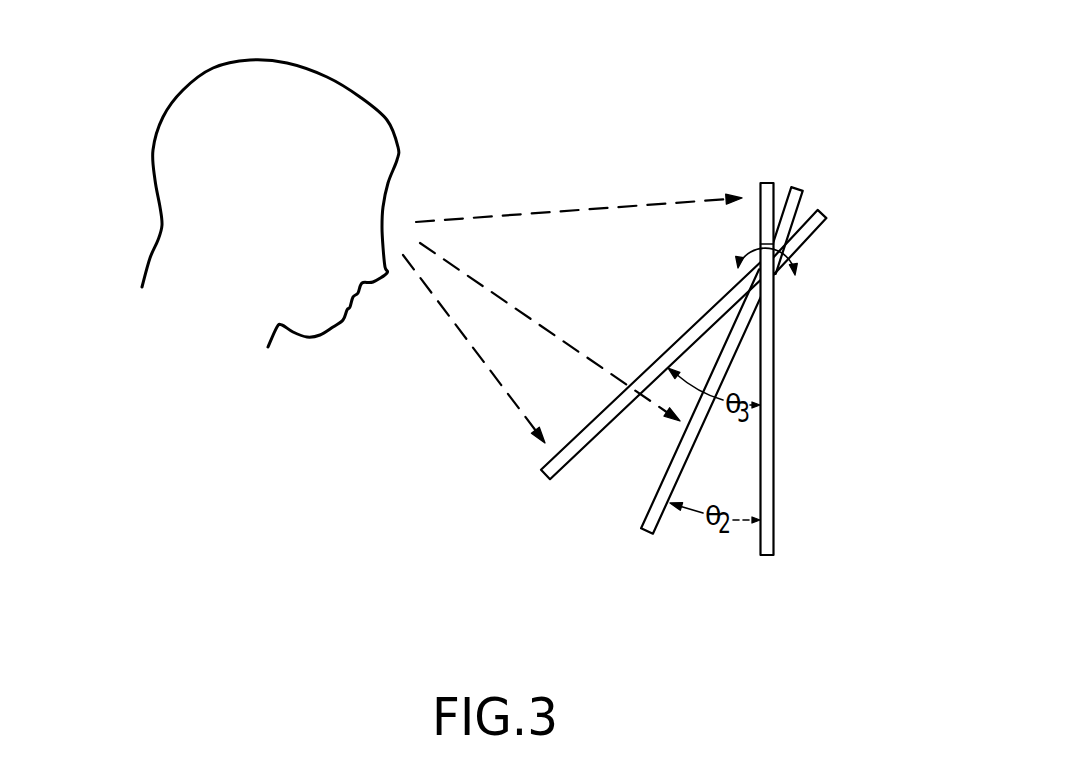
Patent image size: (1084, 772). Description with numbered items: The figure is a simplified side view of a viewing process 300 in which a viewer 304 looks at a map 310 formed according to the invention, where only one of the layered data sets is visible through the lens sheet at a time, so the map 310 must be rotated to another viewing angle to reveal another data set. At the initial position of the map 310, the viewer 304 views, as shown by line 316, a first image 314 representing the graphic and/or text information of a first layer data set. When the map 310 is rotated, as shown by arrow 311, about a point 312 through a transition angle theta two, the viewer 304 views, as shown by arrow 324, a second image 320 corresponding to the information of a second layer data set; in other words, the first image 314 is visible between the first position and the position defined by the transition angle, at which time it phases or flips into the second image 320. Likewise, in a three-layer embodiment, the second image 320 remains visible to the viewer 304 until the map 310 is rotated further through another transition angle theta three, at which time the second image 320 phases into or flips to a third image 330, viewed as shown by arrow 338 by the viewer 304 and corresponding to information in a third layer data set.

The viewing process 300 is at (724, 99).
The viewer 304 is at (158, 228).
The map 310 is at (832, 182).
The arrow 311 is at (792, 257).
The point 312 is at (777, 277).
The first image 314 is at (774, 537).
The line 316 is at (544, 212).
The second image 320 is at (647, 534).
The arrow 324 is at (518, 309).
The third image 330 is at (542, 475).
The arrow 338 is at (470, 342).